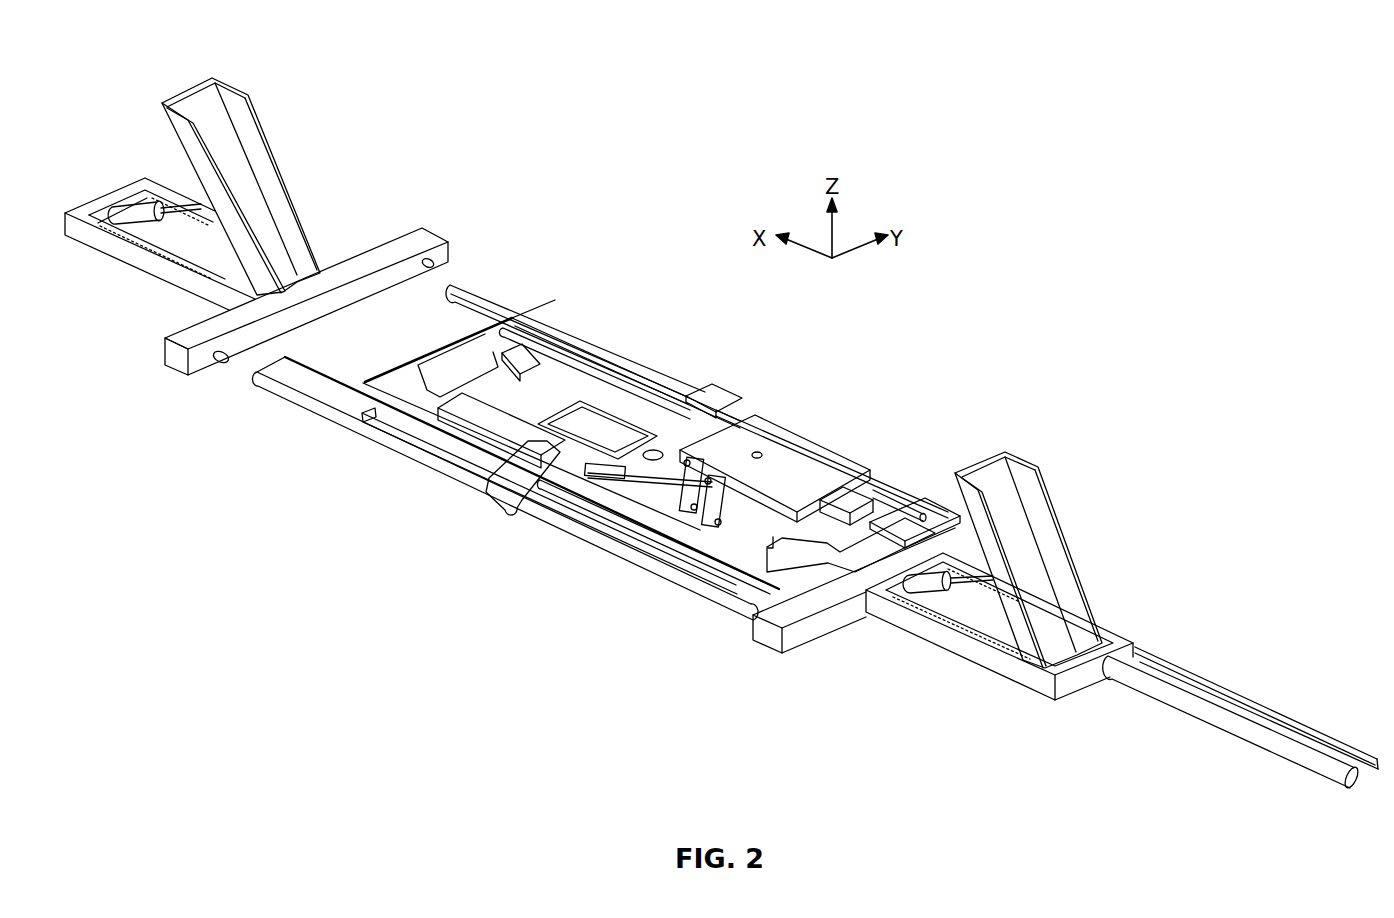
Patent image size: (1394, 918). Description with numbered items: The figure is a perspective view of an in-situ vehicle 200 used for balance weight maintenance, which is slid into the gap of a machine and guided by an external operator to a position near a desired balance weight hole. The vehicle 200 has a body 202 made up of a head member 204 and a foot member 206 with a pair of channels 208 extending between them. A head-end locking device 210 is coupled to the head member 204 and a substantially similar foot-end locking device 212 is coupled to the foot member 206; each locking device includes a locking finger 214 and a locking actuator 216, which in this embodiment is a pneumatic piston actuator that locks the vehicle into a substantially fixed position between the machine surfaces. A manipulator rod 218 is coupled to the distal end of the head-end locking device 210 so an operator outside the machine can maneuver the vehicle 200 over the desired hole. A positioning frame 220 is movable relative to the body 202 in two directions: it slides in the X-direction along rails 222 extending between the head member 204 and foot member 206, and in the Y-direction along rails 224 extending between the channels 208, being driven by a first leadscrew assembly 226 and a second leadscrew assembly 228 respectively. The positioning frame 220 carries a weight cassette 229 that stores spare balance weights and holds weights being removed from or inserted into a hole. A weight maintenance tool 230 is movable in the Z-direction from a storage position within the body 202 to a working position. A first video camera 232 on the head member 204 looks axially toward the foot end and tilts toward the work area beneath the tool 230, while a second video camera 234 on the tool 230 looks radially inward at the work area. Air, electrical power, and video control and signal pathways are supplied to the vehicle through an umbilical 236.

The in-situ vehicle 200 is at (1052, 236).
The body 202 is at (678, 388).
The head member 204 is at (766, 632).
The foot member 206 is at (212, 362).
The channels 208 is at (752, 410).
The head-end locking device 210 is at (1044, 683).
The foot-end locking device 212 is at (172, 280).
The locking finger 214 is at (1052, 492).
The locking actuator 216 is at (930, 589).
The manipulator rod 218 is at (1250, 738).
The positioning frame 220 is at (531, 407).
The rails 222 is at (506, 328).
The rails 224 is at (366, 418).
The first leadscrew assembly 226 is at (491, 487).
The second leadscrew assembly 228 is at (488, 352).
The weight cassette 229 is at (608, 433).
The weight maintenance tool 230 is at (788, 440).
The first video camera 232 is at (952, 522).
The second video camera 234 is at (842, 497).
The umbilical 236 is at (1283, 715).